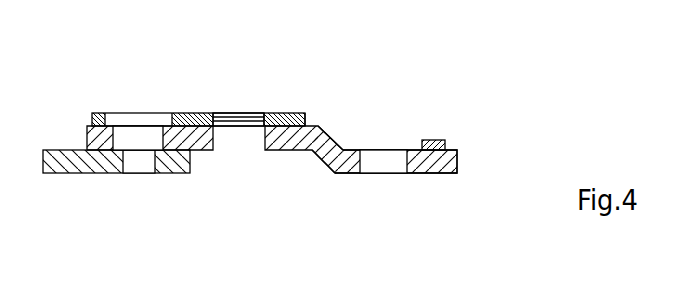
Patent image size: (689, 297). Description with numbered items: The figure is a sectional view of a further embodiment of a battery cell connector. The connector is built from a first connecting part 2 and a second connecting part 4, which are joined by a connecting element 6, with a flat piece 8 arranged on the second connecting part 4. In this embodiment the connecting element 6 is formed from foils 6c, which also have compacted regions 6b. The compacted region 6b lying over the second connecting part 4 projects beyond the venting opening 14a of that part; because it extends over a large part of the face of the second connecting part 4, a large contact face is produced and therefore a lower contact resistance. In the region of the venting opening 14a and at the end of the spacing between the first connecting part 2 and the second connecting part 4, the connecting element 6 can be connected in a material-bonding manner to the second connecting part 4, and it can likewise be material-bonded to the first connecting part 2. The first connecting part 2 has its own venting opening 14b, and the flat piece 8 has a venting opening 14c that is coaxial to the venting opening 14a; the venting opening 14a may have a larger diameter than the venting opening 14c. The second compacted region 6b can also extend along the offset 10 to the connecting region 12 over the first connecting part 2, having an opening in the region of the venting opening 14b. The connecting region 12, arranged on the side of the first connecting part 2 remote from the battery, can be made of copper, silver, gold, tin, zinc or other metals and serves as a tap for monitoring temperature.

The first connecting part 2 is at (433, 167).
The second connecting part 4 is at (92, 137).
The connecting element 6 is at (187, 112).
The compacted region 6b is at (272, 116).
The foils 6c is at (248, 127).
The flat piece 8 is at (63, 165).
The offset 10 is at (332, 147).
The connecting region 12 is at (433, 140).
The venting opening 14a is at (138, 137).
The venting opening 14b is at (388, 165).
The venting opening 14c is at (140, 165).